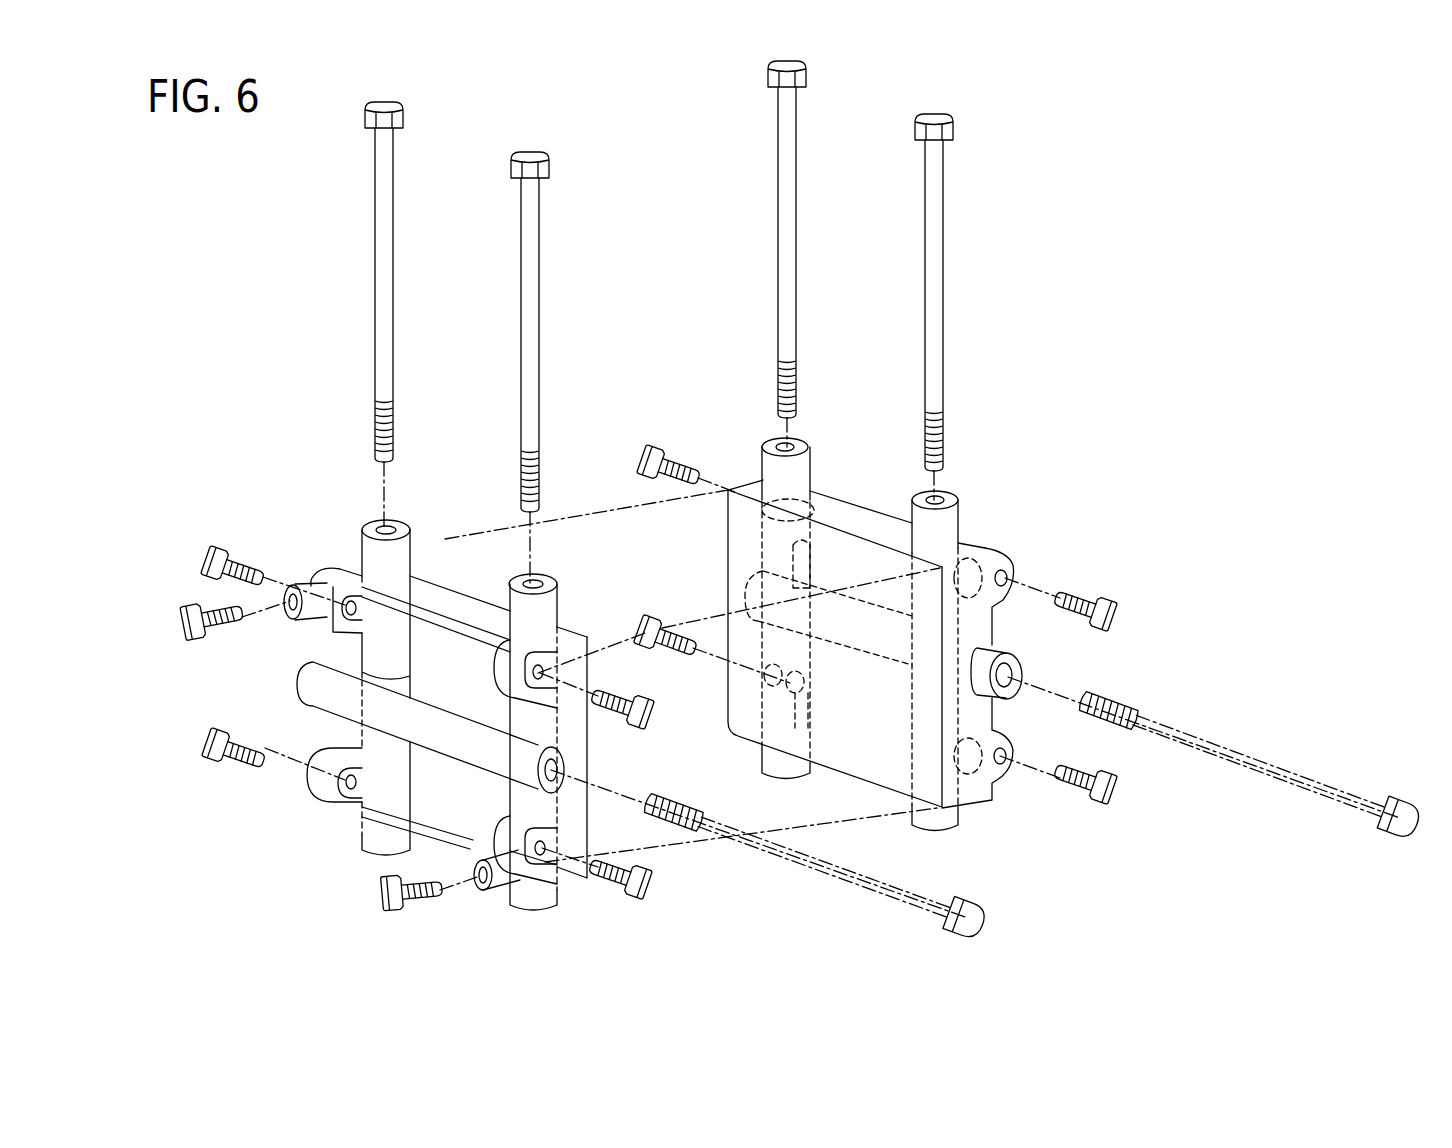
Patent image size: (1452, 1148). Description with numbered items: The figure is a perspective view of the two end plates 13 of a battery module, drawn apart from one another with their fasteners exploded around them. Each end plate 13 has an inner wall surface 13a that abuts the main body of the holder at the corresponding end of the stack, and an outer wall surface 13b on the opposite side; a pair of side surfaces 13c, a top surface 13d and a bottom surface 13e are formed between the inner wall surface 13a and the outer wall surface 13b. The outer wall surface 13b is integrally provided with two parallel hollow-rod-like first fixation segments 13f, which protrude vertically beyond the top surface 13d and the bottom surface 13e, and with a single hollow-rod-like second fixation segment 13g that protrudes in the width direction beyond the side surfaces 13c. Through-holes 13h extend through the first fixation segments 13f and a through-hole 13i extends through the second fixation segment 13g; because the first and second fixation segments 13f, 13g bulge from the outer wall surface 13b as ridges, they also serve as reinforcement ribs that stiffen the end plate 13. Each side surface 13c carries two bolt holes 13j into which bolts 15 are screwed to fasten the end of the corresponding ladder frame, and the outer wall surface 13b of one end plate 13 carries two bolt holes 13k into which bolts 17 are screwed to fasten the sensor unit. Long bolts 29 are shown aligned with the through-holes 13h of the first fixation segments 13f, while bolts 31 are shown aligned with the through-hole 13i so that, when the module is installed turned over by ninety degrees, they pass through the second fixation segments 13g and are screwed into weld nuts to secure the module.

The end plate 13 is at (680, 671).
The inner wall surface 13a is at (838, 717).
The outer wall surface 13b is at (445, 672).
The side surface 13c is at (577, 827).
The top surface 13d is at (480, 607).
The bottom surface 13e is at (447, 857).
The first fixation segment 13f is at (367, 550).
The second fixation segment 13g is at (437, 737).
The through-hole 13h is at (385, 528).
The through-hole 13i is at (557, 767).
The bolt hole 13j is at (547, 672).
The bolt hole 13k is at (285, 615).
The bolt 15 is at (247, 560).
The bolt 17 is at (223, 632).
The long bolt 29 is at (375, 218).
The bolt 31 is at (1273, 760).